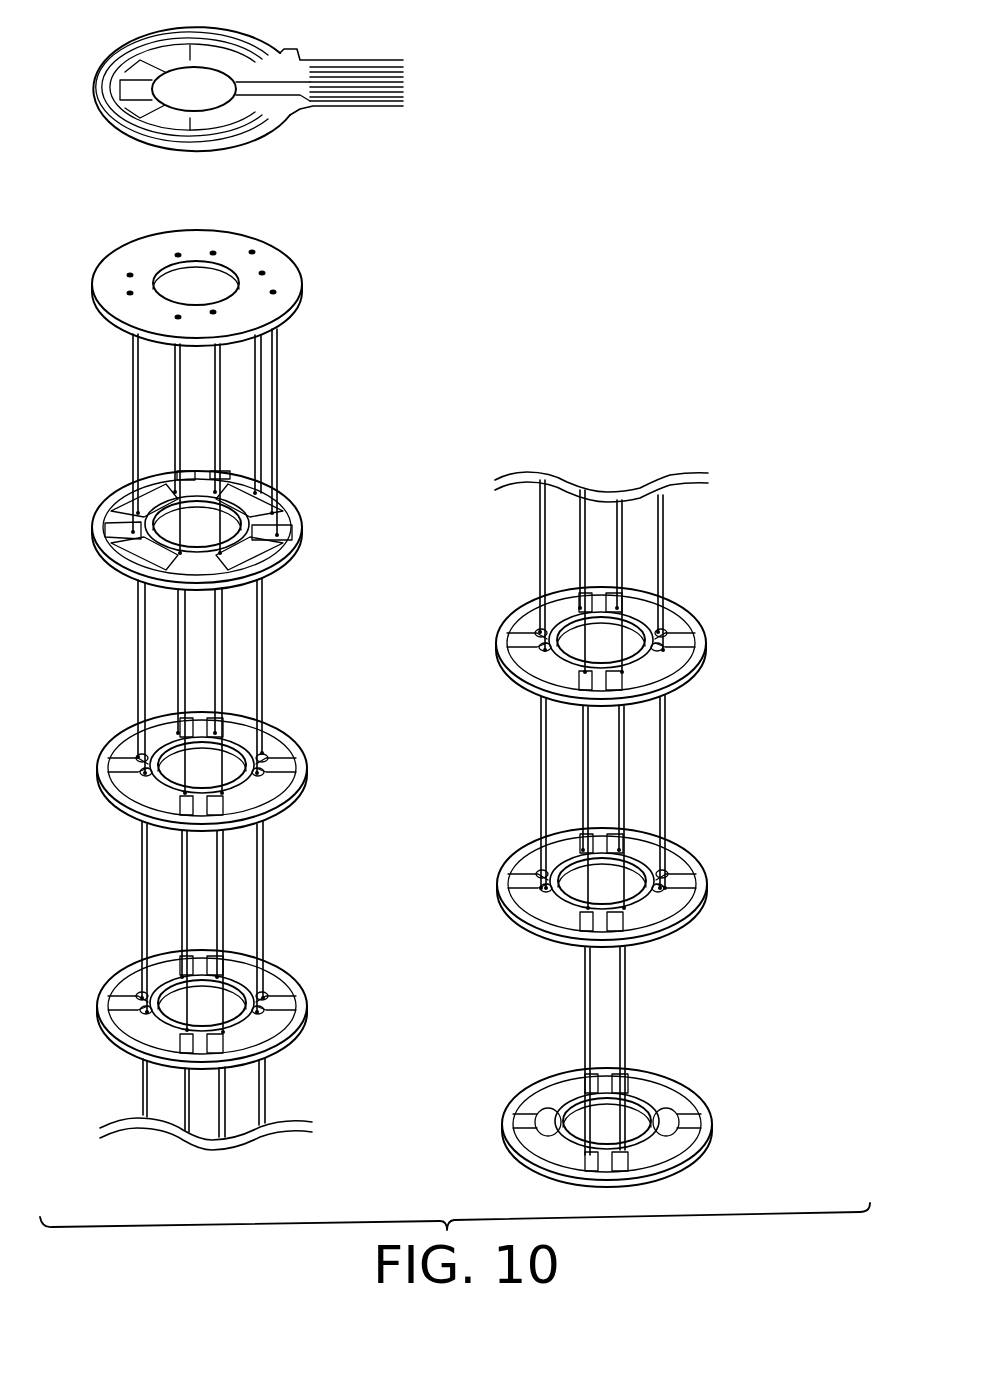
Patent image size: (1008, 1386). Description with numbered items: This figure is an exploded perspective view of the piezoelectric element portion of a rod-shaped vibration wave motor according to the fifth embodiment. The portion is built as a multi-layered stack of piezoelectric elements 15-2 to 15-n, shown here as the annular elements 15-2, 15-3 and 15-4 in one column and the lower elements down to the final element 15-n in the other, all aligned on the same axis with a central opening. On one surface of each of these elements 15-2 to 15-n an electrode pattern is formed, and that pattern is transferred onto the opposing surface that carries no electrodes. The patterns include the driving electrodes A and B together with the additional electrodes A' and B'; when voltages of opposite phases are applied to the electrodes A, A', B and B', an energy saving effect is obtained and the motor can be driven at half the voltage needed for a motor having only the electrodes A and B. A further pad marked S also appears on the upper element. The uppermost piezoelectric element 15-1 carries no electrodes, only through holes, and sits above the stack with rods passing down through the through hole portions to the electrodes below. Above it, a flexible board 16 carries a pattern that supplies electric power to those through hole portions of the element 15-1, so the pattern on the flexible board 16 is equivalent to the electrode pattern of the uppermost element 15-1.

The flexible board 16 is at (284, 89).
The uppermost piezoelectric element 15-1 is at (268, 391).
The piezoelectric element 15-2 is at (269, 632).
The piezoelectric element 15-3 is at (271, 872).
The piezoelectric element 15-4 is at (271, 1050).
The piezoelectric element 15-n is at (672, 1067).
The driving electrode A is at (408, 776).
The electrode A' is at (406, 813).
The driving electrode B is at (407, 749).
The electrode B' is at (413, 814).
The shield terminal S is at (257, 498).